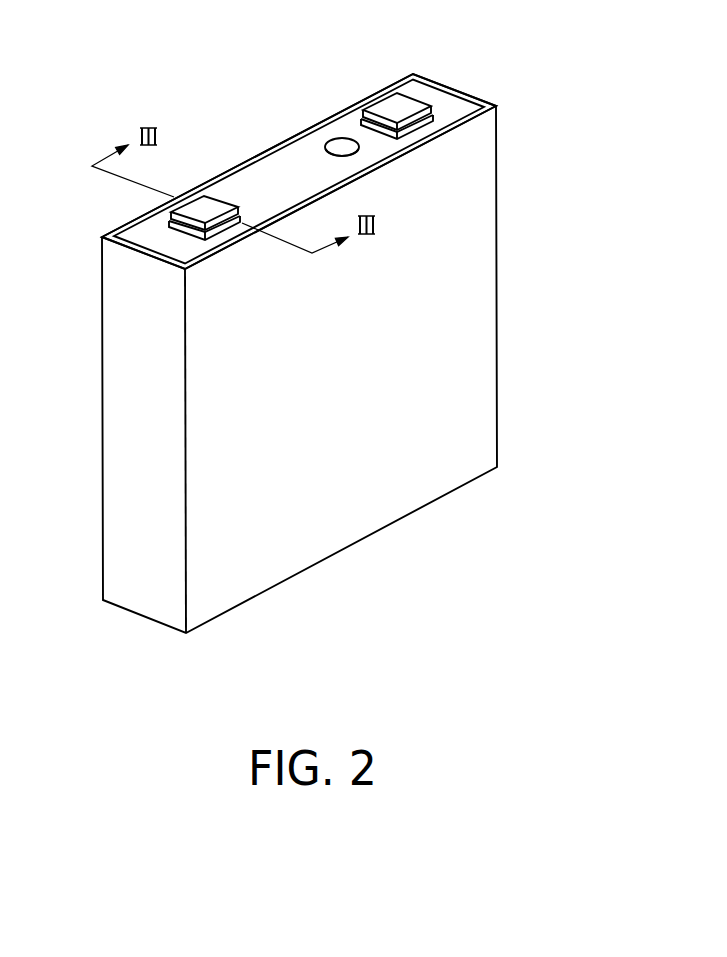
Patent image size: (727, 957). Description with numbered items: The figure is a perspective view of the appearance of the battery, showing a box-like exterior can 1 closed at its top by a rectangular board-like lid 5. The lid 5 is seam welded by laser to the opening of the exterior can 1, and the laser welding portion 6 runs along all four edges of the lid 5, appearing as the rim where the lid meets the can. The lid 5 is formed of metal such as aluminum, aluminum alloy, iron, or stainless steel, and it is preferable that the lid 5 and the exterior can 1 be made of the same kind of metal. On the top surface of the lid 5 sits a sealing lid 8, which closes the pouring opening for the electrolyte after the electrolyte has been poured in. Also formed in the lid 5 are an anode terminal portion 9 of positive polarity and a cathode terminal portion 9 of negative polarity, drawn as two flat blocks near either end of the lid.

The exterior can 1 is at (363, 525).
The lid 5 is at (286, 151).
The laser welding portion 6 is at (442, 134).
The sealing lid 8 is at (340, 142).
The terminal portion 9 is at (209, 200).